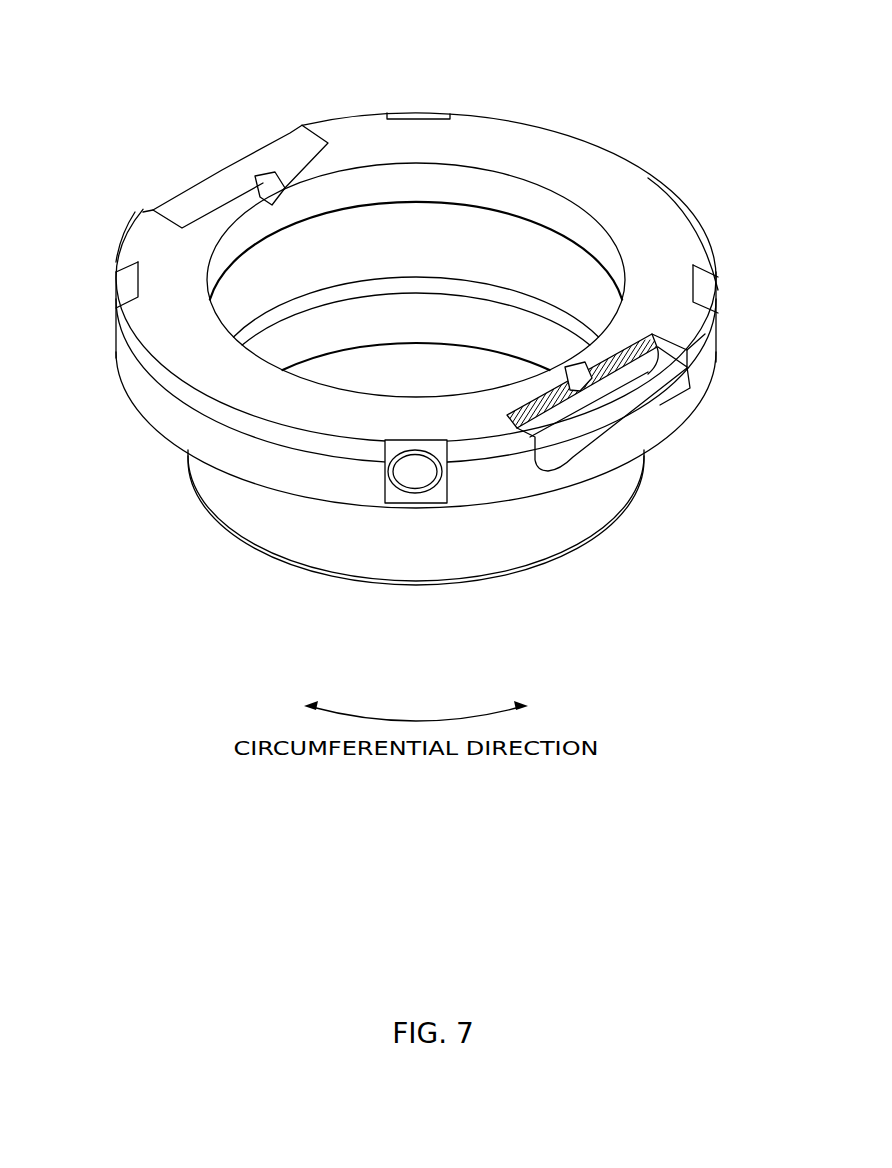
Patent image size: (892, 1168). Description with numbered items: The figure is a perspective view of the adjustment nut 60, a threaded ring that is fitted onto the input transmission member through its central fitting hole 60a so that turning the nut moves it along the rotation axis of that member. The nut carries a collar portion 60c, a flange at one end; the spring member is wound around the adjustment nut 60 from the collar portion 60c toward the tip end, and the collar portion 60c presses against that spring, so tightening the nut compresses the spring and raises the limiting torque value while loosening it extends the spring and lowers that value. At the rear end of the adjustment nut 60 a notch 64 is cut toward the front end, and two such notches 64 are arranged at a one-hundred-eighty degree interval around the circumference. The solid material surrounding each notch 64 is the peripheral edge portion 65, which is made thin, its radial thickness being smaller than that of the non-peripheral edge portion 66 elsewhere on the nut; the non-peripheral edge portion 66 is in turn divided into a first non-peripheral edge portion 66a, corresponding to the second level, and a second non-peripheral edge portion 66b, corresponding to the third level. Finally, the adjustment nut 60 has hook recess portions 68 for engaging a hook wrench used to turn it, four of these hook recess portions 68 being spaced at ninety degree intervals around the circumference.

The adjustment nut 60 is at (494, 70).
The fitting hole 60a is at (403, 370).
The collar portion 60c is at (163, 407).
The notch 64 is at (257, 181).
The peripheral edge portion 65 is at (655, 333).
The non-peripheral edge portion 66 is at (627, 473).
The first non-peripheral edge portion 66a is at (600, 403).
The second non-peripheral edge portion 66b is at (647, 450).
The hook recess portion 68 is at (428, 493).